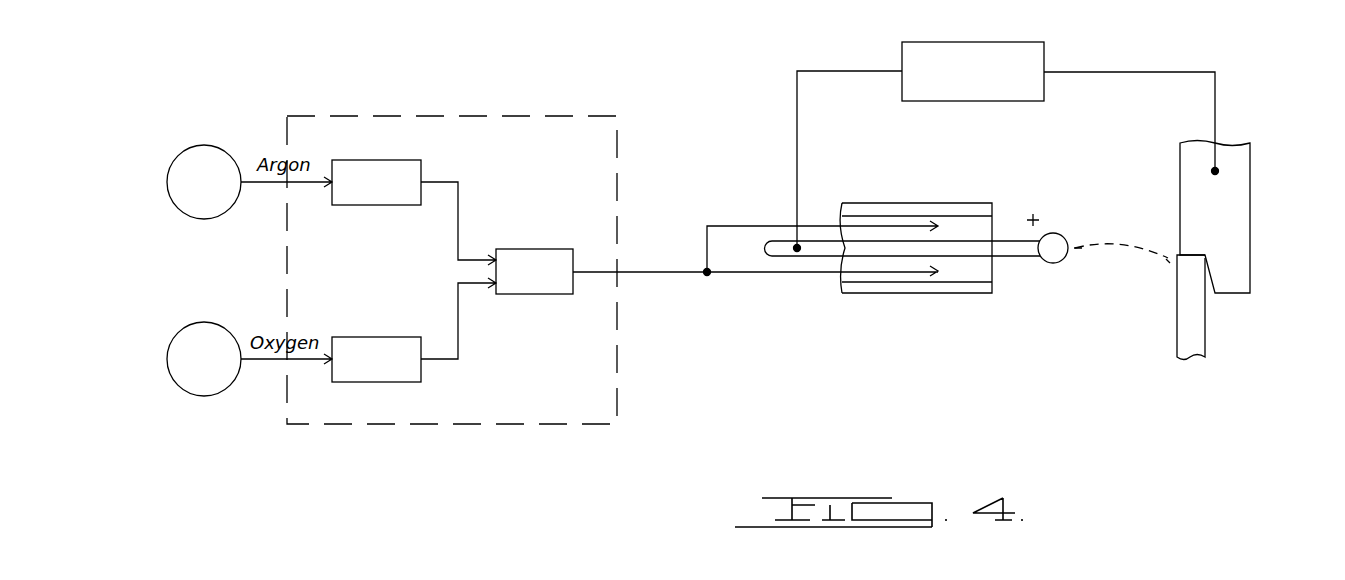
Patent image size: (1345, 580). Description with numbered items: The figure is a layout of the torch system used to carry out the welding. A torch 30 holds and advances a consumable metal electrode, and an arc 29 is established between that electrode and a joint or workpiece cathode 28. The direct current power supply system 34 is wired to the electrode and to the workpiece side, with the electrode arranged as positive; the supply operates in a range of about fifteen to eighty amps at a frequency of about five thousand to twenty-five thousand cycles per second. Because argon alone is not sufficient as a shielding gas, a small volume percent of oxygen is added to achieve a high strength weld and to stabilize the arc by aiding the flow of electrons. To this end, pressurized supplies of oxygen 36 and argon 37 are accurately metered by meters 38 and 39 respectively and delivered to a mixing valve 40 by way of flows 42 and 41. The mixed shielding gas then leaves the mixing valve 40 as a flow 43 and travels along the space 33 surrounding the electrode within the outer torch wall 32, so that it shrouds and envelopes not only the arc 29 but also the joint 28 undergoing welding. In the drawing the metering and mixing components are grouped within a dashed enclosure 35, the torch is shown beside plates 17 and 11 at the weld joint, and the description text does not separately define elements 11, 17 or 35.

The workpiece 11 is at (1200, 340).
The electrode plate 17 is at (1235, 180).
The joint or workpiece cathode 28 is at (1168, 262).
The arc 29 is at (1127, 244).
The torch 30 is at (965, 203).
The outer torch wall 32 is at (913, 293).
The space surrounding the electrode 33 is at (975, 272).
The direct current power supply system 34 is at (1040, 50).
The gas mixing unit 35 is at (509, 432).
The pressurized supply of oxygen 36 is at (203, 396).
The pressurized supply of argon 37 is at (231, 207).
The meter 38 is at (389, 337).
The meter 39 is at (353, 205).
The mixing valve 40 is at (557, 289).
The flow 41 is at (458, 203).
The flow 42 is at (458, 343).
The flow 43 is at (652, 272).